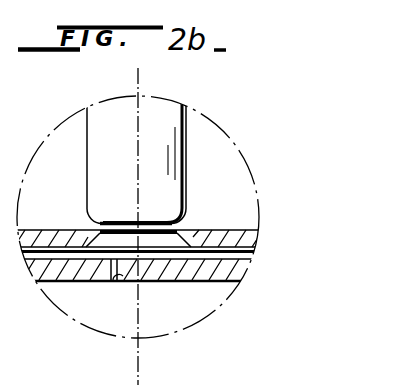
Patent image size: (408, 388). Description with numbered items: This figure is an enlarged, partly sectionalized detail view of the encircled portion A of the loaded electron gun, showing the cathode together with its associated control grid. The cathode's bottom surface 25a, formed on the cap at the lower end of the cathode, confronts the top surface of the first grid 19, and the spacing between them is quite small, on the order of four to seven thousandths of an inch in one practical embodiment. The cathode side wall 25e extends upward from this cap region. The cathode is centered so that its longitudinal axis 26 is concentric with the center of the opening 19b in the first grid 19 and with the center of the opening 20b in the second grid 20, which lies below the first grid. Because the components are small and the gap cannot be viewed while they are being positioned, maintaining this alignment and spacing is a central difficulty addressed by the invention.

The encircled portion A is at (235, 144).
The longitudinal axis 26 is at (142, 89).
The bottom surface 25a is at (112, 229).
The side wall of cup 25e is at (187, 189).
The first grid 19 is at (258, 238).
The opening 19b is at (148, 237).
The second grid 20 is at (243, 277).
The opening 20b is at (118, 282).